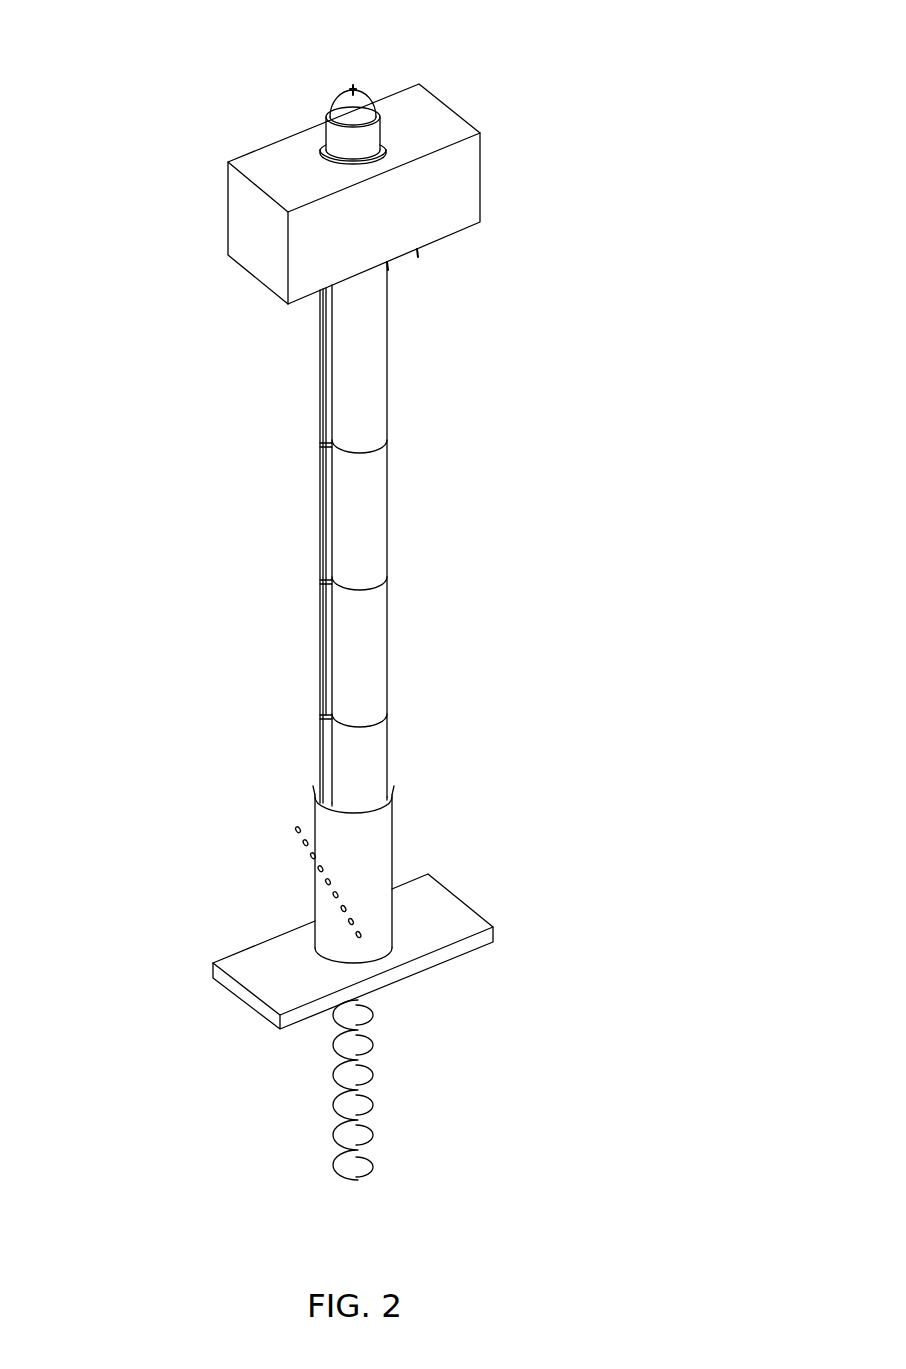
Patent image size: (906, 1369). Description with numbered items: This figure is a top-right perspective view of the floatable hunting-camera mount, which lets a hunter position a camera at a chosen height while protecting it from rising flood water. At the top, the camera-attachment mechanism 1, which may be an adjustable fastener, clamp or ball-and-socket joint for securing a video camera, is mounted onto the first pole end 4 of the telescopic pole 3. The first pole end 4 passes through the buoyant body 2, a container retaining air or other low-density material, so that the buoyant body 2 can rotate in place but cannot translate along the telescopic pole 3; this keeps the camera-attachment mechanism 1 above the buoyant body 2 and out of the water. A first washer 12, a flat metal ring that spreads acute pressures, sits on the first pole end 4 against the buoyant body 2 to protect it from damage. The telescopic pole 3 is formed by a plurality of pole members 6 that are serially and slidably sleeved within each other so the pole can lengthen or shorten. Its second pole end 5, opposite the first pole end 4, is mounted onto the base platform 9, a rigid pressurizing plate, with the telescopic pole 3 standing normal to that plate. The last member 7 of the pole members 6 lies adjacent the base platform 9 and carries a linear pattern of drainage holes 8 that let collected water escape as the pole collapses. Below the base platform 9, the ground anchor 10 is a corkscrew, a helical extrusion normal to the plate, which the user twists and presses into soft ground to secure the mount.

The camera-attachment mechanism 1 is at (362, 105).
The buoyant body 2 is at (288, 153).
The telescopic pole 3 is at (143, 485).
The first pole end 4 is at (420, 370).
The second pole end 5 is at (416, 850).
The plurality of pole members 6 is at (350, 373).
The last member 7 is at (383, 928).
The plurality of drainage holes 8 is at (327, 820).
The base platform 9 is at (255, 972).
The ground anchor 10 is at (345, 1128).
The first washer 12 is at (383, 142).